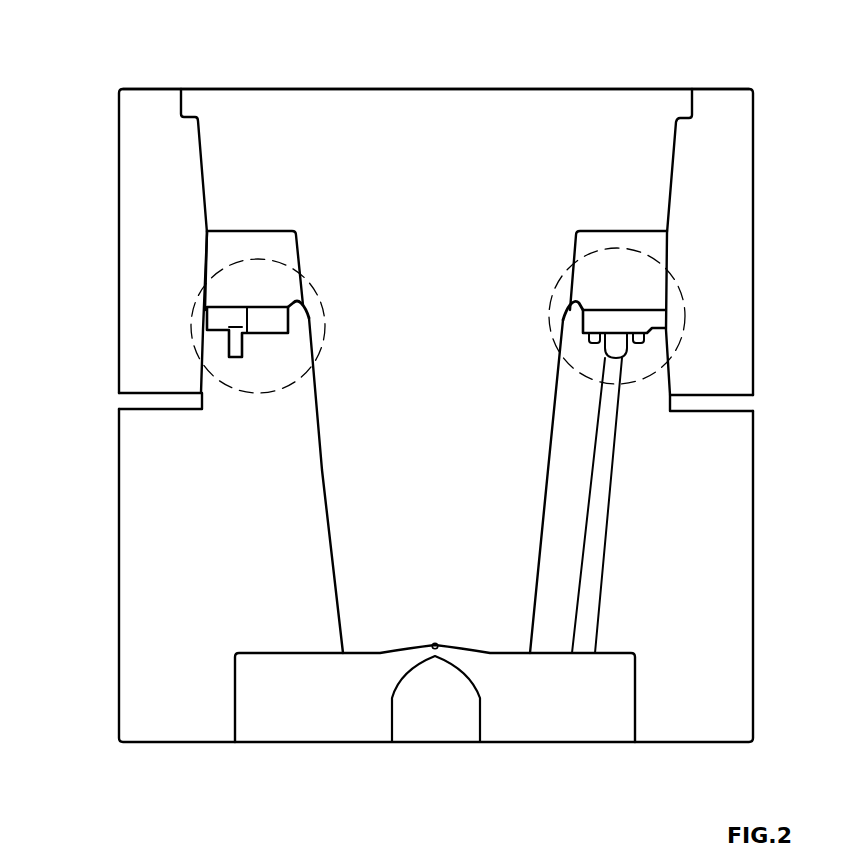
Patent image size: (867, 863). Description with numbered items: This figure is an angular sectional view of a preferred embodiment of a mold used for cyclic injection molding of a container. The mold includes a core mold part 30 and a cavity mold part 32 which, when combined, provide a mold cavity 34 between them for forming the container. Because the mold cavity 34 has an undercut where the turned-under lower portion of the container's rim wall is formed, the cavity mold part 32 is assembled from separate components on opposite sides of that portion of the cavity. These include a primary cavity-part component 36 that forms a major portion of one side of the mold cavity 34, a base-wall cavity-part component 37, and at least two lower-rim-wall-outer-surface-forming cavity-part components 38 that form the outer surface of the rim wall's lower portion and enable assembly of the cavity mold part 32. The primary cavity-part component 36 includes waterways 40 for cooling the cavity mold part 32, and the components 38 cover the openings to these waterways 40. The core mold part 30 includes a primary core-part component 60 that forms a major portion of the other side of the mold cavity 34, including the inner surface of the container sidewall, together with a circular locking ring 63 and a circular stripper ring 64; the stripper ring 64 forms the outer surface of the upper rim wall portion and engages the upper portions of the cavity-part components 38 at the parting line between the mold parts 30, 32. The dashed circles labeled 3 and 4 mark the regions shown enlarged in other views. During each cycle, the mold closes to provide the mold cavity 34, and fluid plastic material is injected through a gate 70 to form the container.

The core mold part 30 is at (528, 90).
The primary core-part component 60 is at (338, 110).
The circular locking ring 63 is at (133, 190).
The circular stripper ring 64 is at (252, 242).
The lower-rim-wall-outer-surface-forming cavity-part component 38 is at (266, 327).
The detail circle for FIG. 3 is at (192, 313).
The detail circle for FIG. 4 is at (684, 302).
The mold cavity 34 is at (325, 457).
The waterways 40 is at (620, 493).
The cavity mold part 32 is at (753, 505).
The primary cavity-part component 36 is at (132, 550).
The base-wall cavity-part component 37 is at (282, 744).
The gate 70 is at (436, 660).